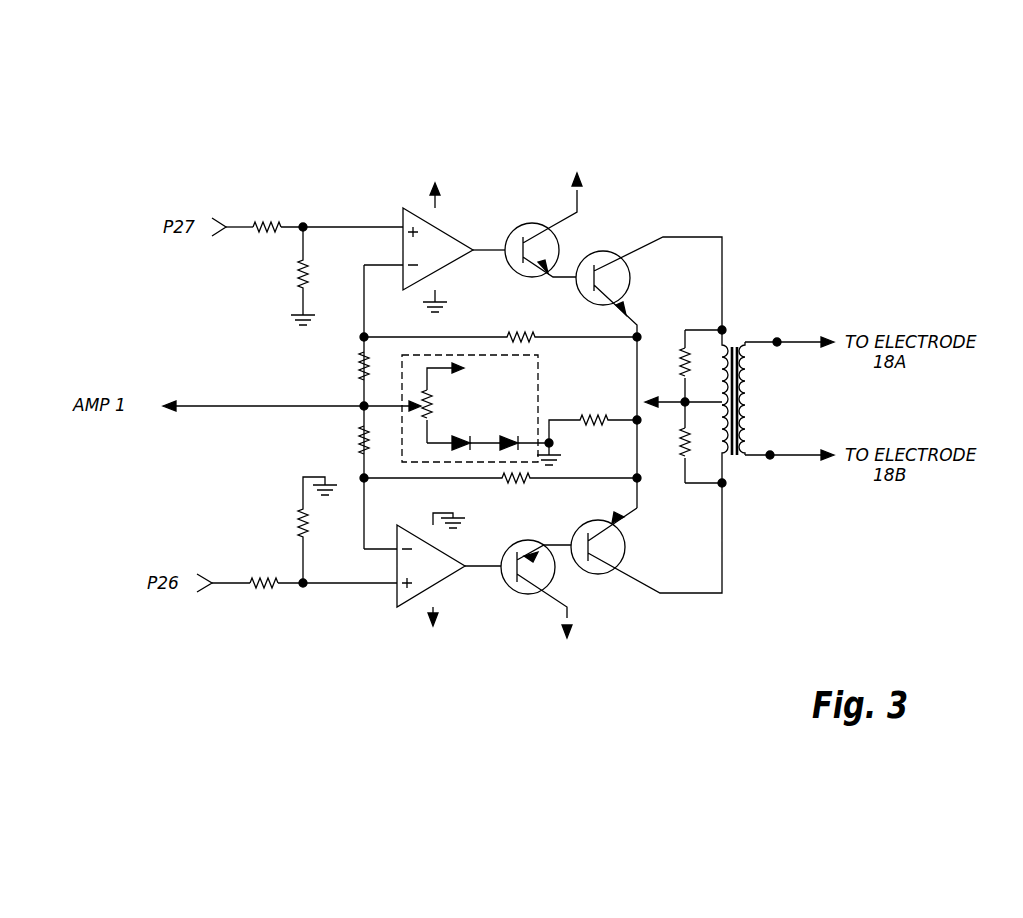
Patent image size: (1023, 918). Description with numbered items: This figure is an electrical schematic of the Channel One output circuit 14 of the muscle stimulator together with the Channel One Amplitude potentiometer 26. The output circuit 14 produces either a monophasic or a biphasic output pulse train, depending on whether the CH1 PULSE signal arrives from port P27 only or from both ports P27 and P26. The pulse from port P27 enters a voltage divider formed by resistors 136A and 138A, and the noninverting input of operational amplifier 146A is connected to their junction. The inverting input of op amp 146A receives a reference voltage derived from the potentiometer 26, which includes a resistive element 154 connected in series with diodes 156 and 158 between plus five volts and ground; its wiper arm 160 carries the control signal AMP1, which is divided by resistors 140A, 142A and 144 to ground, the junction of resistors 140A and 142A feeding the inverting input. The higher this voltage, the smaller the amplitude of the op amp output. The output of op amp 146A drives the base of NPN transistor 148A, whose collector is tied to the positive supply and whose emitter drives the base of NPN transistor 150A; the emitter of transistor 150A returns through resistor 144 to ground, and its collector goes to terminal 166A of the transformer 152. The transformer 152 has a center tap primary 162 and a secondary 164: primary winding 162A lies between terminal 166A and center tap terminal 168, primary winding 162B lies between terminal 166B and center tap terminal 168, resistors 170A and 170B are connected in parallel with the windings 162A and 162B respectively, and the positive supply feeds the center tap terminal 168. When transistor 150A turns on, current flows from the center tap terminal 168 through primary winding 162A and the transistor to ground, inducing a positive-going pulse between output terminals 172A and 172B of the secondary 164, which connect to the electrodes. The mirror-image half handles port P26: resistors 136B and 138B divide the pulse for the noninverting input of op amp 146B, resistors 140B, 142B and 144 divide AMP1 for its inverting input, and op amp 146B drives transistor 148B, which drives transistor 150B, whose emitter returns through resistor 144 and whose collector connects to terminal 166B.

The Channel 1 output circuit 14 is at (812, 120).
The Channel 1 Amplitude potentiometer 26 is at (540, 386).
The resistor 136A is at (262, 222).
The resistor 136B is at (262, 590).
The resistor 138A is at (296, 279).
The resistor 138B is at (298, 520).
The resistor 140A is at (360, 364).
The resistor 140B is at (360, 437).
The resistor 142A is at (525, 340).
The resistor 142B is at (516, 482).
The resistor 144 is at (585, 428).
The operational amplifier 146A is at (440, 232).
The operational amplifier 146B is at (442, 587).
The NPN transistor 148A is at (508, 276).
The transistor 148B is at (522, 543).
The NPN transistor 150A is at (630, 286).
The transistor 150B is at (592, 574).
The transformer 152 is at (739, 390).
The resistive element 154 is at (433, 403).
The diode 156 is at (462, 436).
The diode 158 is at (511, 436).
The wiper arm 160 is at (366, 404).
The center tap primary 162 is at (732, 456).
The primary winding 162A is at (722, 372).
The primary winding 162B is at (722, 437).
The secondary 164 is at (750, 394).
The terminal 166A is at (720, 328).
The terminal 166B is at (720, 486).
The center tap terminal 168 is at (680, 402).
The resistor 170A is at (685, 366).
The resistor 170B is at (685, 442).
The output terminal 172A is at (780, 336).
The output terminal 172B is at (772, 460).